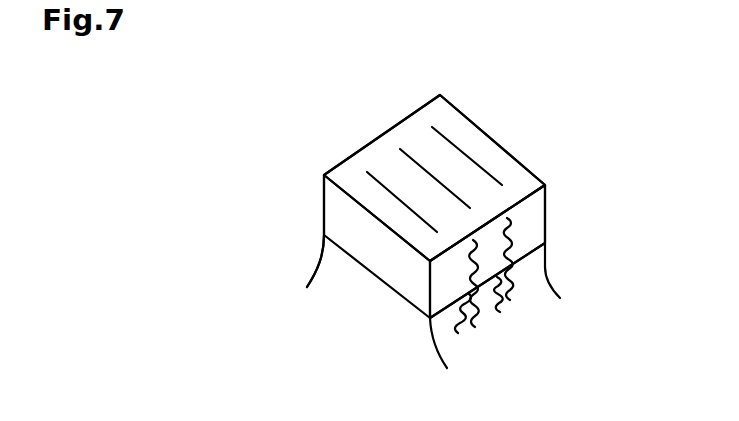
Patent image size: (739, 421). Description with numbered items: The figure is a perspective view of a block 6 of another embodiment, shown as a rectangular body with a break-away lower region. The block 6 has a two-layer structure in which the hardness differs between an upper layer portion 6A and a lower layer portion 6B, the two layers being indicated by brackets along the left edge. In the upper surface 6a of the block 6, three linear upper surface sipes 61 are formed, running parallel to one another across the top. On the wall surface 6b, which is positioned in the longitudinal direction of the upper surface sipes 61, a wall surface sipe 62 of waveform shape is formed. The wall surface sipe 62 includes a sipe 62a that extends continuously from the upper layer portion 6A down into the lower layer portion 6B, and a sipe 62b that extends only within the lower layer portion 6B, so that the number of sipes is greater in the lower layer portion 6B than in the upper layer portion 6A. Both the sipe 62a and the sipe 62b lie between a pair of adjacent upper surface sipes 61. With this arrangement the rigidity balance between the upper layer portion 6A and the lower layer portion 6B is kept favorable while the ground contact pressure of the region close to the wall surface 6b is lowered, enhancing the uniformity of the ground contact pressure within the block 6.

The block 6 is at (495, 140).
The upper surface 6a is at (408, 138).
The upper surface sipe 61 is at (447, 138).
The wall surface 6b is at (537, 230).
The upper layer portion 6A is at (279, 172).
The lower layer portion 6B is at (279, 230).
The wall surface sipe 62 is at (549, 312).
The sipe 62a is at (512, 293).
The sipe 62b is at (500, 312).